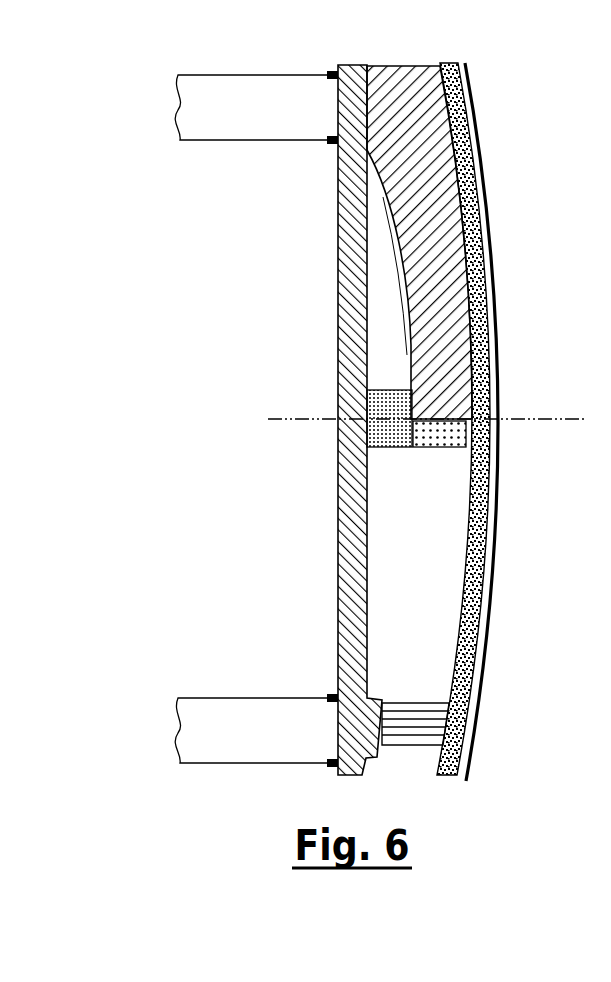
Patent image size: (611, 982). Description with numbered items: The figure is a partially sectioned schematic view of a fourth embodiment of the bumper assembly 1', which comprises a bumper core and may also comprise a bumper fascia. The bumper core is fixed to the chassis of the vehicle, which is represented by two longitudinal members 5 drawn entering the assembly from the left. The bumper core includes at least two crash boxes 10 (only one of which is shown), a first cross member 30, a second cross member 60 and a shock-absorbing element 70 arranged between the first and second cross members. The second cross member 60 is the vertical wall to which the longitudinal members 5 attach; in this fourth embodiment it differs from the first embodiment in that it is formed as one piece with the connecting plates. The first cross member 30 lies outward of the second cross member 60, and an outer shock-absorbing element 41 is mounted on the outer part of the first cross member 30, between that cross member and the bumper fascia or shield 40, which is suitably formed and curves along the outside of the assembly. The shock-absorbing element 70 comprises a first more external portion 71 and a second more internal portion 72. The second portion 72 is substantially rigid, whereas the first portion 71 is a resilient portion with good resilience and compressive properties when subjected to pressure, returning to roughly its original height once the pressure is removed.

The bumper assembly 1' is at (375, 482).
The longitudinal member 5 is at (233, 142).
The crash box 10 is at (415, 703).
The first cross member 30 is at (405, 85).
The bumper fascia or shield 40 is at (498, 352).
The outer shock-absorbing element 41 is at (484, 147).
The second cross member 60 is at (340, 328).
The shock-absorbing element 70 is at (407, 497).
The first more external portion 71 is at (443, 433).
The second more internal portion 72 is at (387, 440).